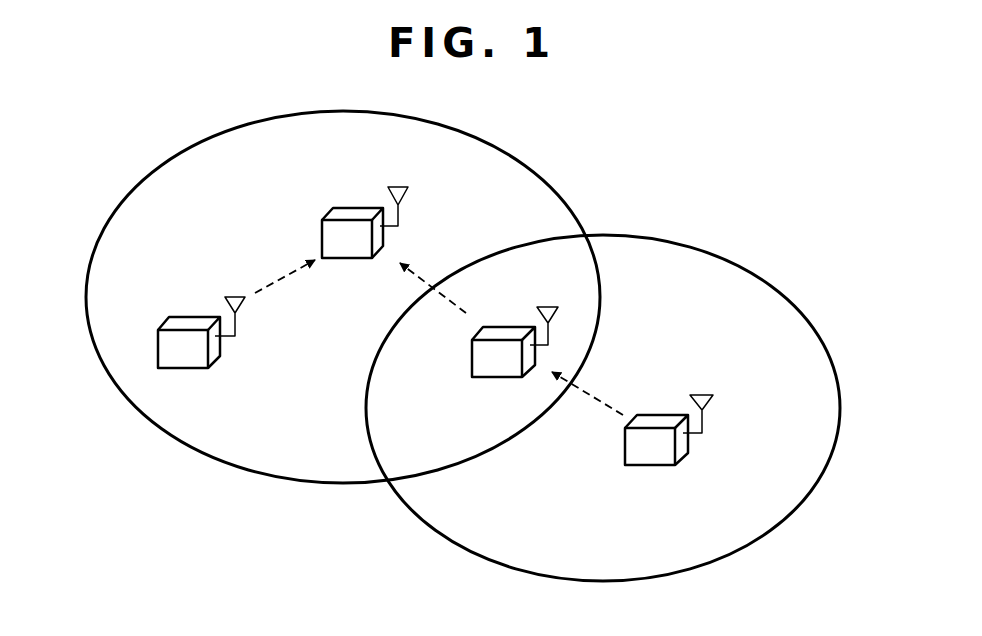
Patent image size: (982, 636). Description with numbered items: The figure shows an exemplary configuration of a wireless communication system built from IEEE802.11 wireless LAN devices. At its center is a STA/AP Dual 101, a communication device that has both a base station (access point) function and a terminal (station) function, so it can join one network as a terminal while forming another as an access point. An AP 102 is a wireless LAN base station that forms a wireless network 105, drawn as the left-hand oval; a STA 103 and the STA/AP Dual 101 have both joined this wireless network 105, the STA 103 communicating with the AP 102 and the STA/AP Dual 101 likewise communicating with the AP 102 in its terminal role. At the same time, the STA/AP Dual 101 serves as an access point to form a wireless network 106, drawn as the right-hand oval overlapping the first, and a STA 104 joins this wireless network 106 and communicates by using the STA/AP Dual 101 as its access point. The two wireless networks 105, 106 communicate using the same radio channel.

The STA/AP Dual 101 is at (503, 327).
The AP 102 is at (349, 207).
The STA 103 is at (188, 318).
The STA 104 is at (656, 415).
The wireless network 105 is at (525, 158).
The wireless network 106 is at (780, 290).